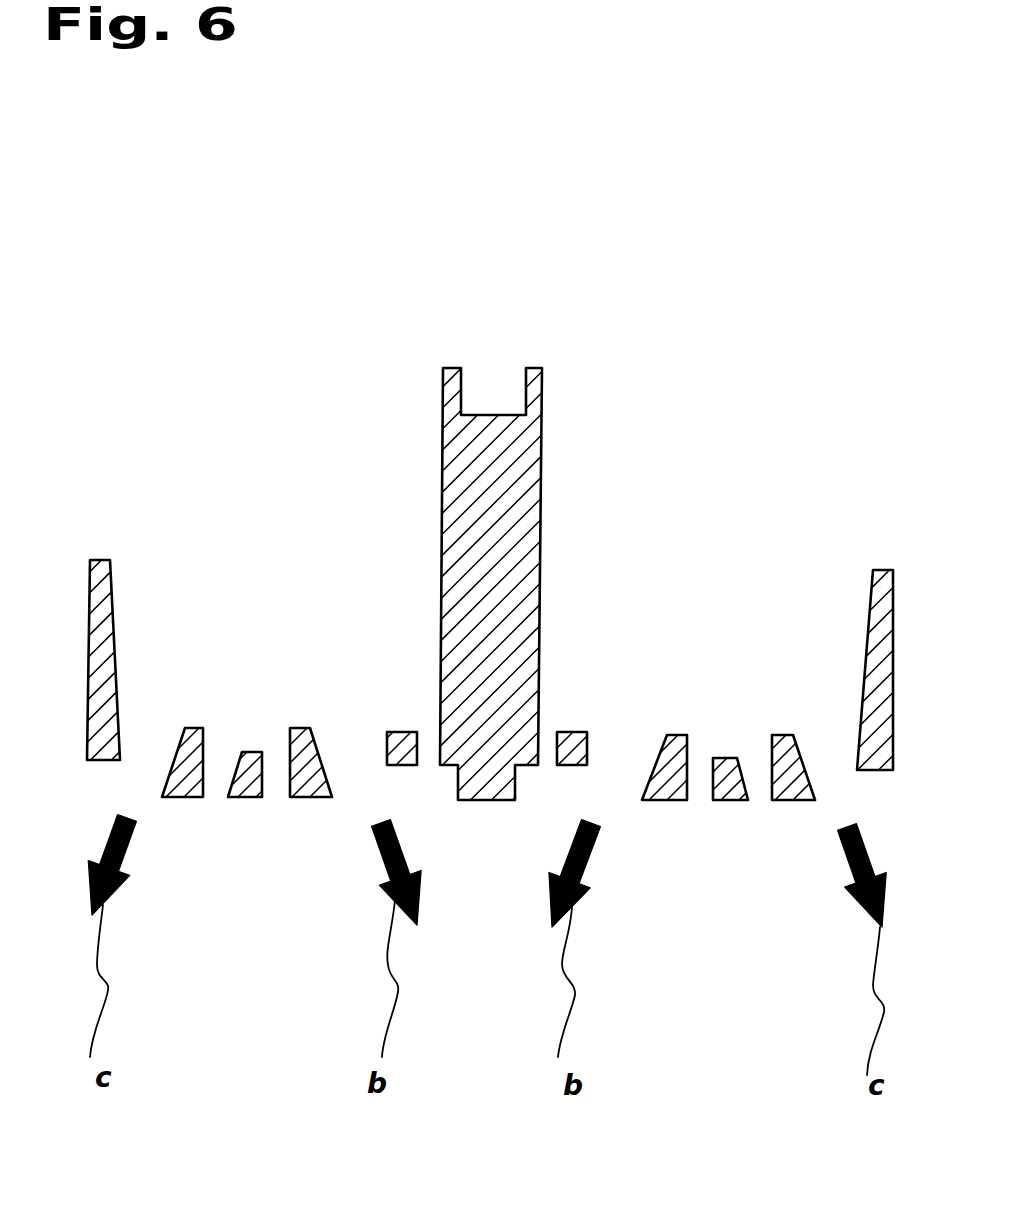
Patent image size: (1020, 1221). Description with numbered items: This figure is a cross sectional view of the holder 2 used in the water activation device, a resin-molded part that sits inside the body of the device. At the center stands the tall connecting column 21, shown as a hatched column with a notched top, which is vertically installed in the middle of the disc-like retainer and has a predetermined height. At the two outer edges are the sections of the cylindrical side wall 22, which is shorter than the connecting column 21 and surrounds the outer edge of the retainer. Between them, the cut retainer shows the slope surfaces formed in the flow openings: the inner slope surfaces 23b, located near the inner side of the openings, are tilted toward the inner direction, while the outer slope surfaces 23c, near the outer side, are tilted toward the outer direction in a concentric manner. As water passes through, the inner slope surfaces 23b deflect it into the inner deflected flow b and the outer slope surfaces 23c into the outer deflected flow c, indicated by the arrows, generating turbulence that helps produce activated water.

The holder 2 is at (590, 385).
The connecting column 21 is at (457, 432).
The cylindrical side wall 22 is at (100, 567).
The inner slope surfaces 23b is at (316, 750).
The outer slope surfaces 23c is at (172, 752).